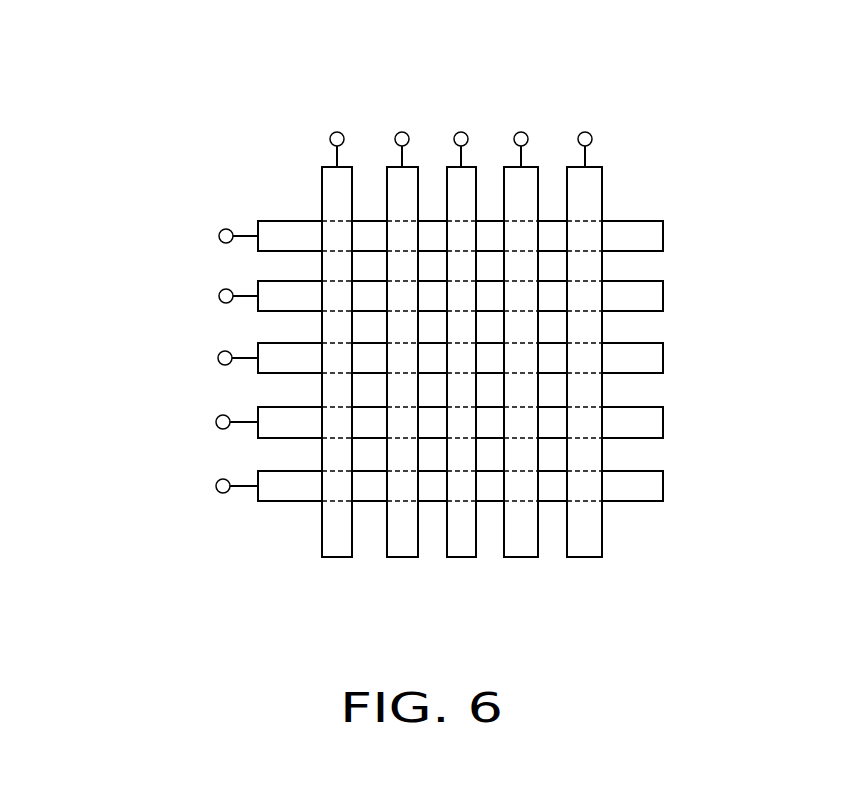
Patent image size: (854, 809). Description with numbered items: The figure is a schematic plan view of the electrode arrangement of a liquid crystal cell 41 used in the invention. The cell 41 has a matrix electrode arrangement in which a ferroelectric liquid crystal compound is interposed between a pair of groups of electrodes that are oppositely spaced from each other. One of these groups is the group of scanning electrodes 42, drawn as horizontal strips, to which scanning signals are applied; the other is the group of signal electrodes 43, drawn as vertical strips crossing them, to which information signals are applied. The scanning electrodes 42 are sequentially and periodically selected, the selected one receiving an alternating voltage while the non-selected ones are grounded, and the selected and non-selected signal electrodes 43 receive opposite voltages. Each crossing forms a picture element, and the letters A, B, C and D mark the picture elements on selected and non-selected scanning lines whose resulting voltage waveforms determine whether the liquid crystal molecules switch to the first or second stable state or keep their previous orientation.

The cell 41 is at (640, 211).
The group of scanning electrodes 42 is at (104, 369).
The group of signal electrodes 43 is at (716, 72).